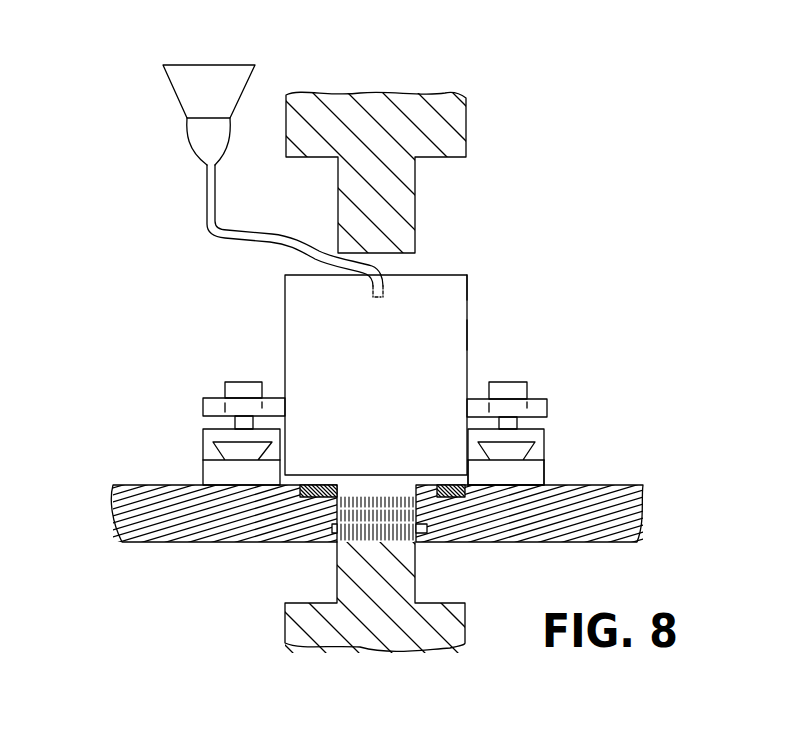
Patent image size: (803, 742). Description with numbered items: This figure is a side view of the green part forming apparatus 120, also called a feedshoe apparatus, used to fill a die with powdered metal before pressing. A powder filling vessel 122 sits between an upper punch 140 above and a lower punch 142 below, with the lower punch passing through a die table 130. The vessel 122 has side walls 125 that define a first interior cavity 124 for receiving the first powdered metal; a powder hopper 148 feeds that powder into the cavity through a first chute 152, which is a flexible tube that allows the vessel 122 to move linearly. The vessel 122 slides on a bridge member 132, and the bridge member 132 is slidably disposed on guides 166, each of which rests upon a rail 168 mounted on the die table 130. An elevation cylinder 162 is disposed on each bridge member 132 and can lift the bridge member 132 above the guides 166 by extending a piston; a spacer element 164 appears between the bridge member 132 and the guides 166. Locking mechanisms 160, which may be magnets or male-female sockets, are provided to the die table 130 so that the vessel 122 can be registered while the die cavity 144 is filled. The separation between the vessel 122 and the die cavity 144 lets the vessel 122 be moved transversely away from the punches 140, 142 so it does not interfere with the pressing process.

The green part forming apparatus 120 is at (541, 94).
The powder filling vessel 122 is at (467, 334).
The first interior cavity 124 is at (285, 305).
The side walls 125 is at (467, 297).
The die table 130 is at (600, 493).
The bridge member 132 is at (203, 404).
The upper punch 140 is at (403, 207).
The lower punch 142 is at (417, 578).
The die cavity 144 is at (333, 497).
The powder hopper 148 is at (198, 84).
The first chute 152 is at (212, 202).
The locking mechanism 160 is at (297, 502).
The elevation cylinder 162 is at (225, 382).
The spacer 164 is at (235, 423).
The guide 166 is at (547, 448).
The rail 168 is at (547, 472).